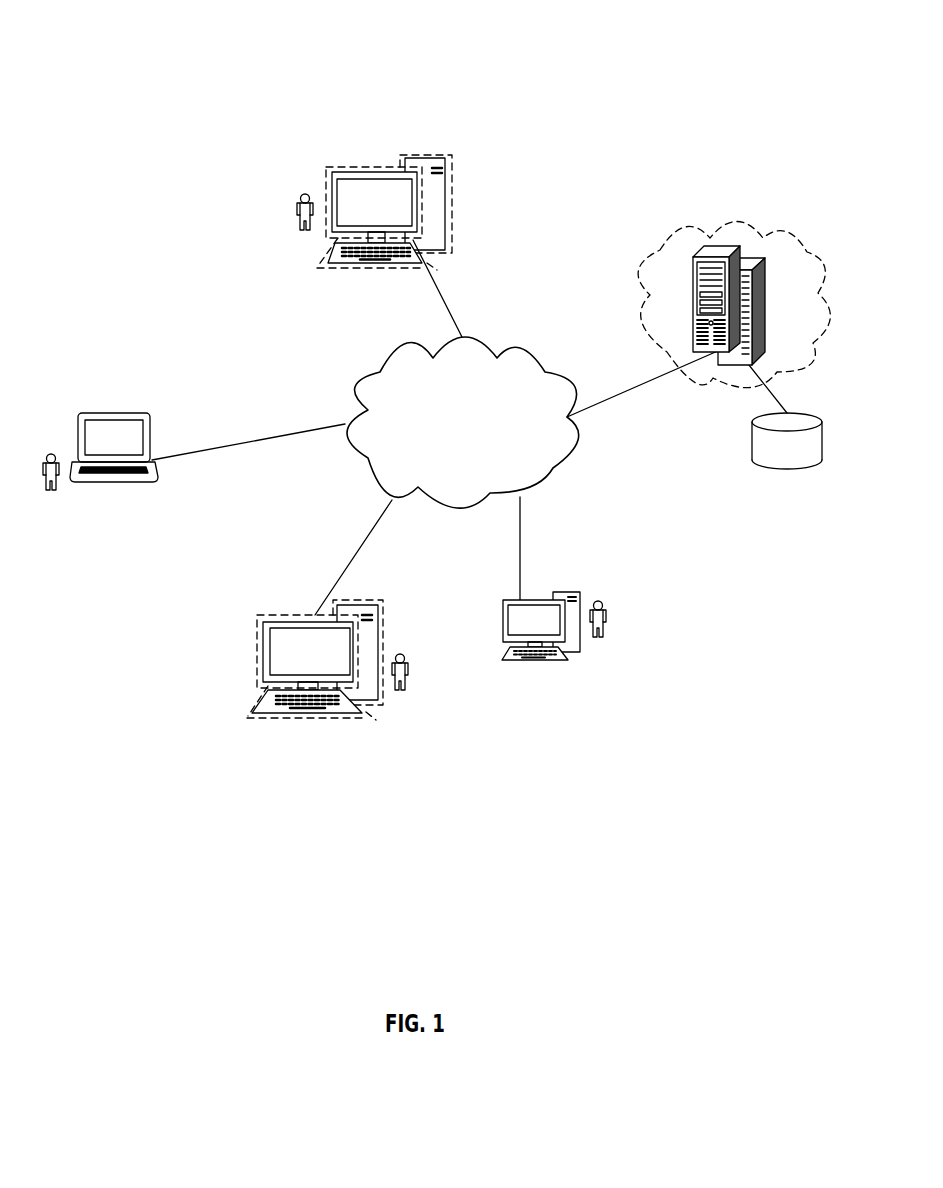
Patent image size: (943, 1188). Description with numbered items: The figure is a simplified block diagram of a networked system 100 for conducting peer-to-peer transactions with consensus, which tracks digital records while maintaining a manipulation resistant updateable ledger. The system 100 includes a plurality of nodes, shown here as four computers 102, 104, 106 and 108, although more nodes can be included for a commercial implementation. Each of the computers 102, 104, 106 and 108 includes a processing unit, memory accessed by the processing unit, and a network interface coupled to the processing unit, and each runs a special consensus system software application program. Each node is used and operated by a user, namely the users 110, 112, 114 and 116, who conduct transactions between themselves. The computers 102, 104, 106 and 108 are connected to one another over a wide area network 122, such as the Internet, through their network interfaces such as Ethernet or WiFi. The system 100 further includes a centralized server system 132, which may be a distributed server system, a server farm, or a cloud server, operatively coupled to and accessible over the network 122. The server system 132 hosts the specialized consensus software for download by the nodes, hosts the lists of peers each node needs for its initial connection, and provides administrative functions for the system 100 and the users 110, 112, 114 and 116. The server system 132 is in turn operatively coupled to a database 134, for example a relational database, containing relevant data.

The networked system 100 is at (187, 85).
The computer 102 is at (145, 483).
The computer 104 is at (315, 718).
The computer 106 is at (552, 660).
The computer 108 is at (440, 228).
The user 110 is at (57, 488).
The user 112 is at (403, 688).
The user 114 is at (602, 637).
The user 116 is at (298, 217).
The wide area network 122 is at (575, 453).
The server system 132 is at (765, 352).
The database 134 is at (785, 462).